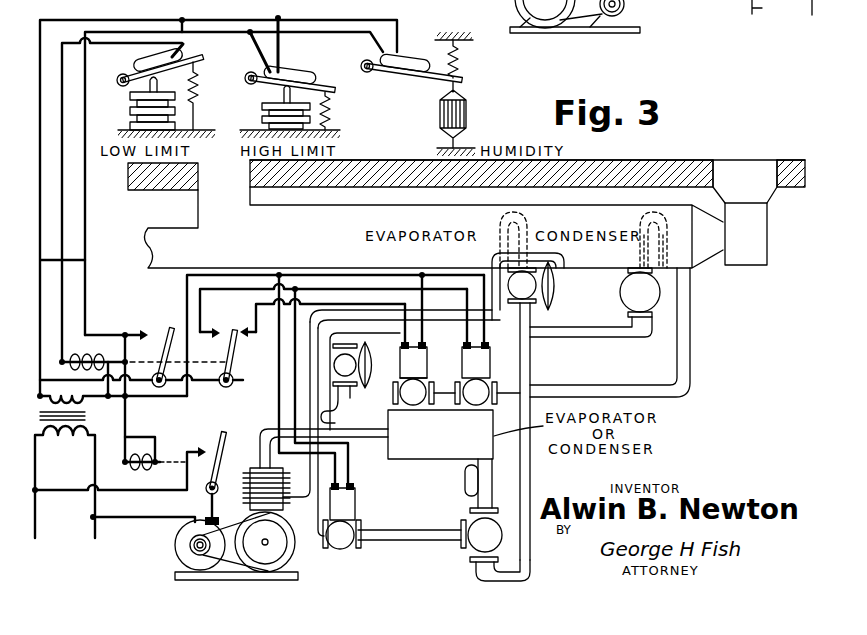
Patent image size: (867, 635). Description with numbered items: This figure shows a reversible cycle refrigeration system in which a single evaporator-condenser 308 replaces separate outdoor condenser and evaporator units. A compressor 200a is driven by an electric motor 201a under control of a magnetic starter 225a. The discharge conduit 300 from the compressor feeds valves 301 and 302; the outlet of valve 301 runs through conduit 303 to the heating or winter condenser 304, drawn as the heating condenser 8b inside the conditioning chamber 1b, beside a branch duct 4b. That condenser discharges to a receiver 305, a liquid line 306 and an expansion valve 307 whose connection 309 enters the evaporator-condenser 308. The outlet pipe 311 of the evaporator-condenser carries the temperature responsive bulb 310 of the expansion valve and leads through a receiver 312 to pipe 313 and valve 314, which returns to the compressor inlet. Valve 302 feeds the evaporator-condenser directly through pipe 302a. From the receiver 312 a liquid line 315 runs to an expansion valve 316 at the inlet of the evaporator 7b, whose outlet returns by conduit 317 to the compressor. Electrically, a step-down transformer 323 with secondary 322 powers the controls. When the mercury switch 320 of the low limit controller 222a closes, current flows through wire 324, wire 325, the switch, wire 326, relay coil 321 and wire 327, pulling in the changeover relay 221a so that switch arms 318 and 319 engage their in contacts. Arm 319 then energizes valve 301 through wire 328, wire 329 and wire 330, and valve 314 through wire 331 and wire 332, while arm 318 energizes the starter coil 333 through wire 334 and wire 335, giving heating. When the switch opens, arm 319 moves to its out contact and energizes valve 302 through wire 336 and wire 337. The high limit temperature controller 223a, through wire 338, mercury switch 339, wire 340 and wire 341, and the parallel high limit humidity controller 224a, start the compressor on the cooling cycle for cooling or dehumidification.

The wire 324 is at (132, 16).
The wire 325 is at (184, 41).
The mercury switch 320 is at (128, 63).
The low limit controller 222a is at (122, 92).
The wire 340 is at (253, 55).
The wire 338 is at (281, 54).
The mercury switch 339 is at (328, 72).
The high limit temperature controller 223a is at (338, 95).
The high limit humidity controller 224a is at (413, 50).
The wire 341 is at (86, 196).
The wire 326 is at (62, 226).
The conditioning chamber 1b is at (444, 265).
The branch duct 4b is at (734, 187).
The evaporator 7b is at (497, 216).
The heating condenser 8b is at (637, 216).
The heating or winter condenser 304 is at (640, 248).
The expansion valve 316 is at (541, 307).
The receiver 305 is at (620, 292).
The liquid line 306 is at (614, 330).
The conduit 303 is at (615, 389).
The wire 330 is at (354, 270).
The wire 329 is at (250, 291).
The wire 337 is at (420, 294).
The wire 331 is at (279, 348).
The wire 332 is at (279, 400).
The conduit 317 is at (310, 376).
The wire 328 is at (199, 382).
The relay 221a is at (157, 324).
The switch arm 318 is at (164, 350).
The switch arm 319 is at (222, 352).
The wire 336 is at (256, 319).
The relay coil 321 is at (96, 358).
The secondary 322 is at (125, 402).
The wire 327 is at (112, 392).
The wire 335 is at (76, 419).
The step-down transformer 323 is at (78, 445).
The wire 334 is at (152, 425).
The starter coil 333 is at (122, 466).
The magnetic starter 225a is at (183, 428).
The electric motor 201a is at (177, 561).
The compressor 200a is at (297, 548).
The expansion valve 307 is at (334, 352).
The pipe 302a is at (388, 374).
The connection 309 is at (336, 419).
The valve 302 is at (420, 375).
The valve 301 is at (482, 375).
The evaporator-condenser 308 is at (480, 455).
The discharge conduit 300 is at (432, 429).
The temperature responsive bulb 310 is at (464, 482).
The outlet pipe 311 is at (486, 494).
The receiver 312 is at (463, 521).
The pipe 313 is at (413, 543).
The valve 314 is at (351, 511).
The liquid line 315 is at (592, 548).